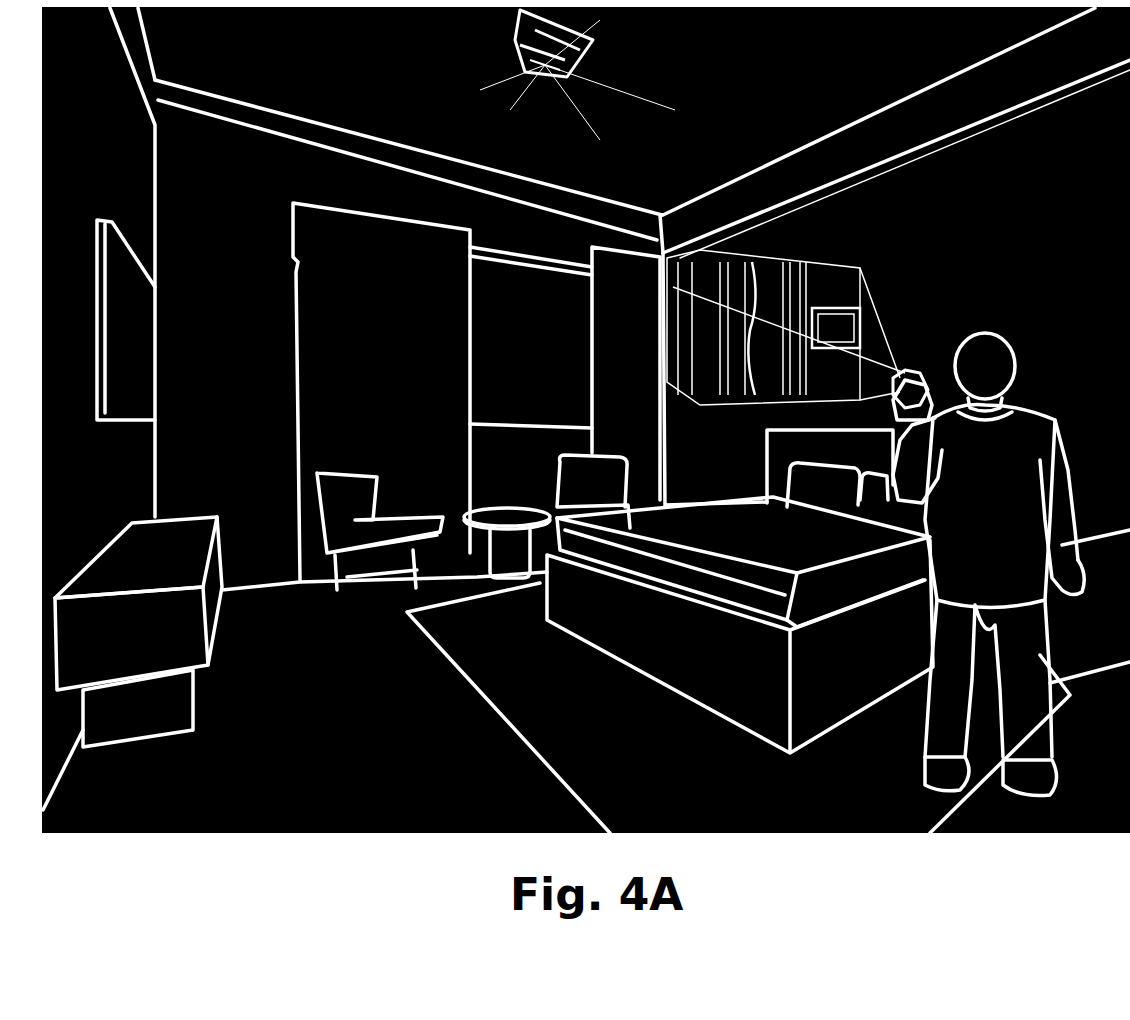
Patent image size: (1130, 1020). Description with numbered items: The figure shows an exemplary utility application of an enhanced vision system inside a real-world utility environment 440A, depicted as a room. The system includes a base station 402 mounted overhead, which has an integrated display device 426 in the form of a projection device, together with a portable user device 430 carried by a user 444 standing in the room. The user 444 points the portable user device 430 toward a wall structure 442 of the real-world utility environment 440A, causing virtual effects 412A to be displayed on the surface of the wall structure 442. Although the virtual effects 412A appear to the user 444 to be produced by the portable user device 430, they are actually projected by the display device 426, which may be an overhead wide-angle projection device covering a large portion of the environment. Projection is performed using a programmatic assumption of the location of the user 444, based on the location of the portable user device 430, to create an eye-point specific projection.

The real-world utility environment 440A is at (586, 420).
The display device 426 is at (527, 48).
The base station 402 is at (512, 85).
The wall structure 442 is at (796, 318).
The virtual effects 412A is at (828, 306).
The portable user device 430 is at (923, 360).
The user 444 is at (1046, 407).